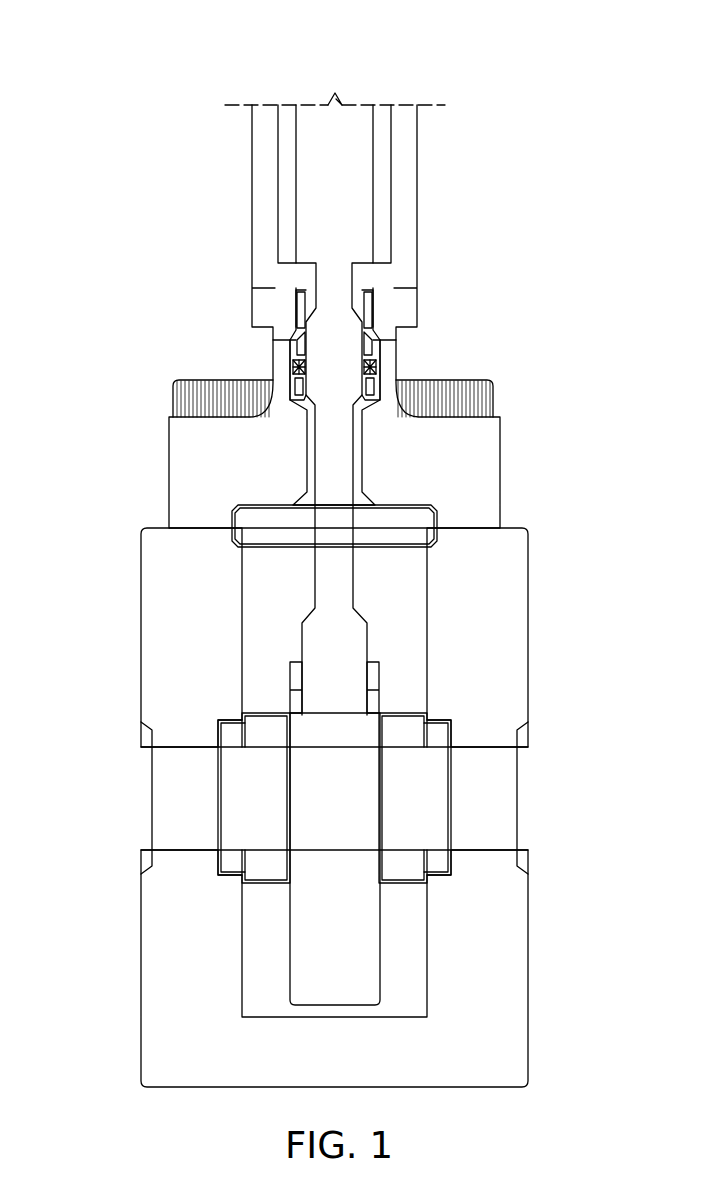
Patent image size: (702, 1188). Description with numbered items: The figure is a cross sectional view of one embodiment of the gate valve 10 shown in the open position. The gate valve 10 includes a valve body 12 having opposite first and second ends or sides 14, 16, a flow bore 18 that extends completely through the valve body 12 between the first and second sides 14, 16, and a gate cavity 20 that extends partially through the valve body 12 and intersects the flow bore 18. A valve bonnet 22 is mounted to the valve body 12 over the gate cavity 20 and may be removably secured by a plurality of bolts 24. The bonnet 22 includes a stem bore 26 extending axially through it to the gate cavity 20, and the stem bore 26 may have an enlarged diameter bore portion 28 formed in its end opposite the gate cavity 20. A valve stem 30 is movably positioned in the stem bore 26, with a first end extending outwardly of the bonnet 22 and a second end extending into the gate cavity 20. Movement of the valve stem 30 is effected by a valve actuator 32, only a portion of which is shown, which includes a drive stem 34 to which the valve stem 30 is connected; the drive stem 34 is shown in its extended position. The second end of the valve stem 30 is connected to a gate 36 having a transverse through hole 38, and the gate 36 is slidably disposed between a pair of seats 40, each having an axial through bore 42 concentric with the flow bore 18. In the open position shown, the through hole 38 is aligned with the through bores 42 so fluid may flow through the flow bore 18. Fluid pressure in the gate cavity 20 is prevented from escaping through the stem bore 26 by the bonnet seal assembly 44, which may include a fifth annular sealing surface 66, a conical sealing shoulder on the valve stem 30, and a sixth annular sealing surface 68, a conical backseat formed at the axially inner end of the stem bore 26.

The gate valve 10 is at (148, 80).
The valve body 12 is at (536, 658).
The first end or side 14 is at (142, 1050).
The second end or side 16 is at (528, 1050).
The flow bore 18 is at (185, 850).
The gate cavity 20 is at (427, 632).
The valve bonnet 22 is at (498, 466).
The bolts 24 is at (461, 380).
The stem bore 26 is at (316, 432).
The enlarged diameter bore portion 28 is at (372, 322).
The valve stem 30 is at (313, 577).
The valve actuator 32 is at (420, 163).
The drive stem 34 is at (385, 198).
The gate 36 is at (380, 958).
The transverse through hole 38 is at (337, 848).
The seats 40 is at (250, 722).
The axial through bore 42 is at (265, 745).
The bonnet seal assembly 44 is at (294, 360).
The fifth annular sealing surface 66 is at (313, 616).
The sixth annular sealing surface 68 is at (310, 546).